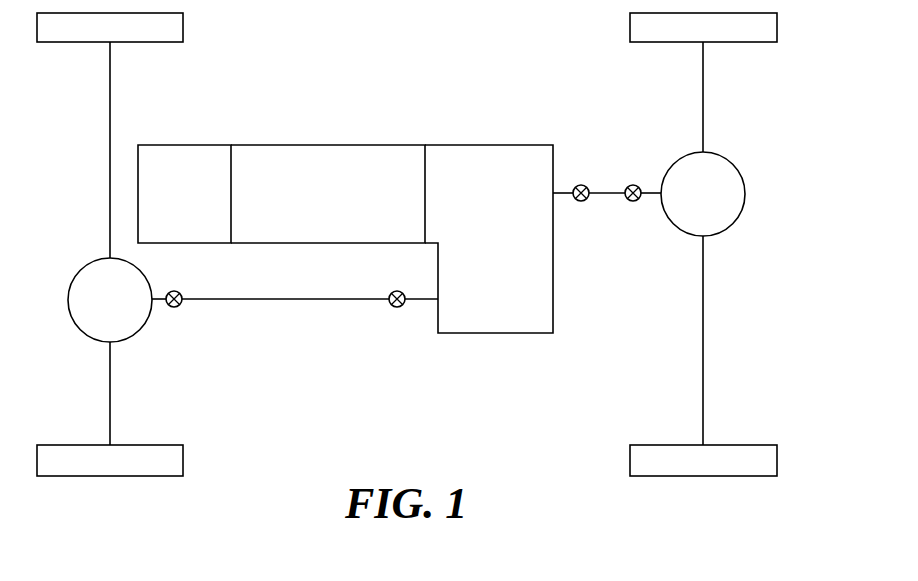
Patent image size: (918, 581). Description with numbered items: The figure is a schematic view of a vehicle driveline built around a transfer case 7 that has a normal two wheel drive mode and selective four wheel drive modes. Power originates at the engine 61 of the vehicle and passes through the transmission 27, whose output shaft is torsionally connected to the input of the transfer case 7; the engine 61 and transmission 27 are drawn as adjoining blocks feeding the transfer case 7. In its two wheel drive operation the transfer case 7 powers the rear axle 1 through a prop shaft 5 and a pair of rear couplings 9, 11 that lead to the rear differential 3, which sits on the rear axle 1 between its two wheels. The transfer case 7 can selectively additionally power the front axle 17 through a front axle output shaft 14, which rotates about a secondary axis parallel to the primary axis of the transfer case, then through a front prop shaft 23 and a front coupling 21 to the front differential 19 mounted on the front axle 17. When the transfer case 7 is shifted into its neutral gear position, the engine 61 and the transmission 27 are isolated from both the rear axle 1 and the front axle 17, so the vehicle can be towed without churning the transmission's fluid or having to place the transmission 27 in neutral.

The rear axle 1 is at (703, 96).
The rear differential 3 is at (739, 211).
The prop shaft 5 is at (615, 193).
The transfer case 7 is at (471, 145).
The rear coupling 9 is at (562, 192).
The rear coupling 11 is at (654, 193).
The front axle output shaft 14 is at (421, 301).
The front axle 17 is at (110, 397).
The front differential 19 is at (124, 338).
The front coupling 21 is at (157, 302).
The front prop shaft 23 is at (283, 300).
The transmission 27 is at (314, 145).
The engine 61 is at (181, 145).